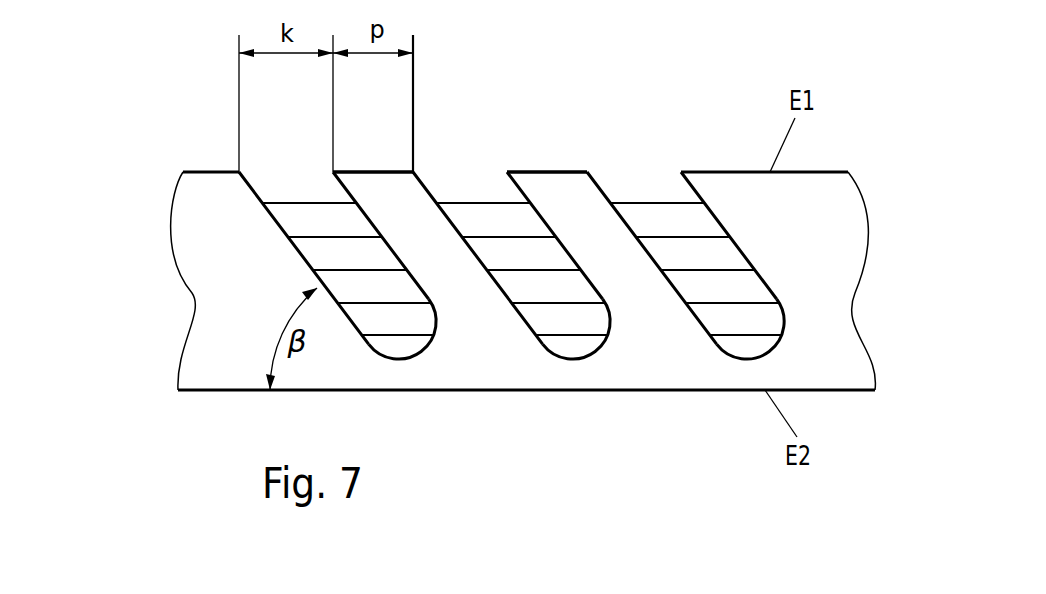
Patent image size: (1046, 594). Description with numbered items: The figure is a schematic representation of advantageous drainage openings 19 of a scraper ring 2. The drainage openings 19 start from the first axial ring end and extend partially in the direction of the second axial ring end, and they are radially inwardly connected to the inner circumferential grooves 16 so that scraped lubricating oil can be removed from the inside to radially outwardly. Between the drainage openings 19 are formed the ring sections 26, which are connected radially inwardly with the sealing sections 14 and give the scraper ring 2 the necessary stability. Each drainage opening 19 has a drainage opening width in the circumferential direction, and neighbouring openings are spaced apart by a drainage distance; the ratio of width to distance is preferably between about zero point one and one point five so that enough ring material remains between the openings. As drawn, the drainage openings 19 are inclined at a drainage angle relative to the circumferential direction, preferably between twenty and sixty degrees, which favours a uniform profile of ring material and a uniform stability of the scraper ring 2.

The scraper ring 2 is at (155, 162).
The sealing sections 14 is at (643, 192).
The inner circumferential grooves 16 is at (529, 292).
The drainage openings 19 is at (397, 345).
The ring sections 26 is at (402, 217).